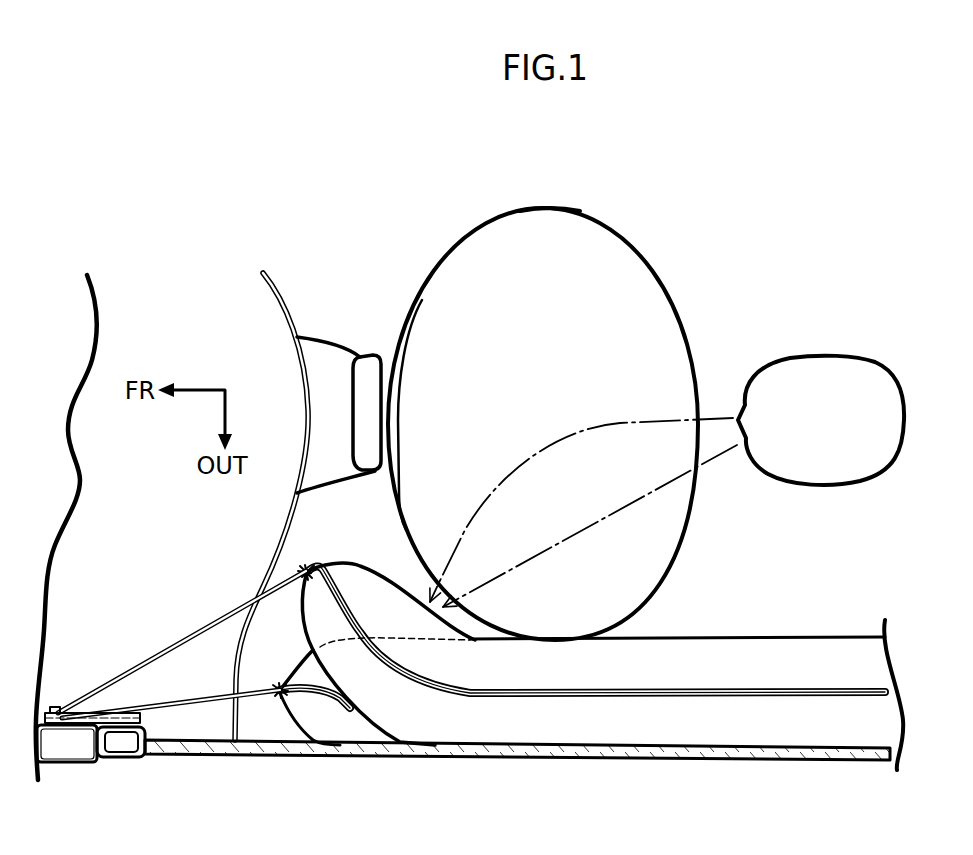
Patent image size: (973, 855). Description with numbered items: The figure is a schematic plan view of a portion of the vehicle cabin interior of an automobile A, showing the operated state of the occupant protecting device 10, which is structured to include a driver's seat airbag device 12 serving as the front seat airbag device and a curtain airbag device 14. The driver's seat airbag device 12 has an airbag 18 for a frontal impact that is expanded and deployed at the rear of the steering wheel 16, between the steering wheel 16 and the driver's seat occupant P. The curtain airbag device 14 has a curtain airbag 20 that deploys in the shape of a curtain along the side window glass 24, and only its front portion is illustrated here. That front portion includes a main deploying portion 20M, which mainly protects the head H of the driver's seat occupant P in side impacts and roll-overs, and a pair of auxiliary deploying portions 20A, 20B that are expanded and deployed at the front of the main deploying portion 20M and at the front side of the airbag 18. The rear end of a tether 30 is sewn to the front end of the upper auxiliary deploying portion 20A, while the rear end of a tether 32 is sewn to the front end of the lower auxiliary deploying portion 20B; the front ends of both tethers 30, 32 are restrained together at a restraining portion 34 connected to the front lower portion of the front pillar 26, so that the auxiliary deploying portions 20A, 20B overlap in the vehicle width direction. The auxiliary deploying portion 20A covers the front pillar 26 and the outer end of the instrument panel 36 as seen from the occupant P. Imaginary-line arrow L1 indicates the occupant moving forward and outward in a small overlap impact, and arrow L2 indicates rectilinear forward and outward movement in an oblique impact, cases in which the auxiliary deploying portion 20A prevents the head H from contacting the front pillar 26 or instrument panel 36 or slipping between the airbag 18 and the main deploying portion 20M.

The occupant protecting device 10 is at (742, 183).
The driver's seat airbag device 12 is at (572, 203).
The curtain airbag device 14 is at (750, 606).
The steering wheel 16 is at (398, 343).
The airbag for a frontal impact 18 is at (543, 237).
The curtain airbag 20 is at (591, 655).
The auxiliary deploying portion 20A is at (363, 580).
The auxiliary deploying portion 20B is at (327, 718).
The main deploying portion 20M is at (680, 632).
The side window glass 24 is at (580, 757).
The front pillar 26 is at (53, 765).
The tether 30 is at (150, 660).
The tether 32 is at (180, 703).
The restraining portion 34 is at (57, 706).
The instrument panel 36 is at (272, 328).
The head H is at (838, 370).
The driver's seat occupant P is at (898, 360).
The arrow L1 is at (606, 419).
The arrow L2 is at (617, 512).
The automobile A is at (750, 763).